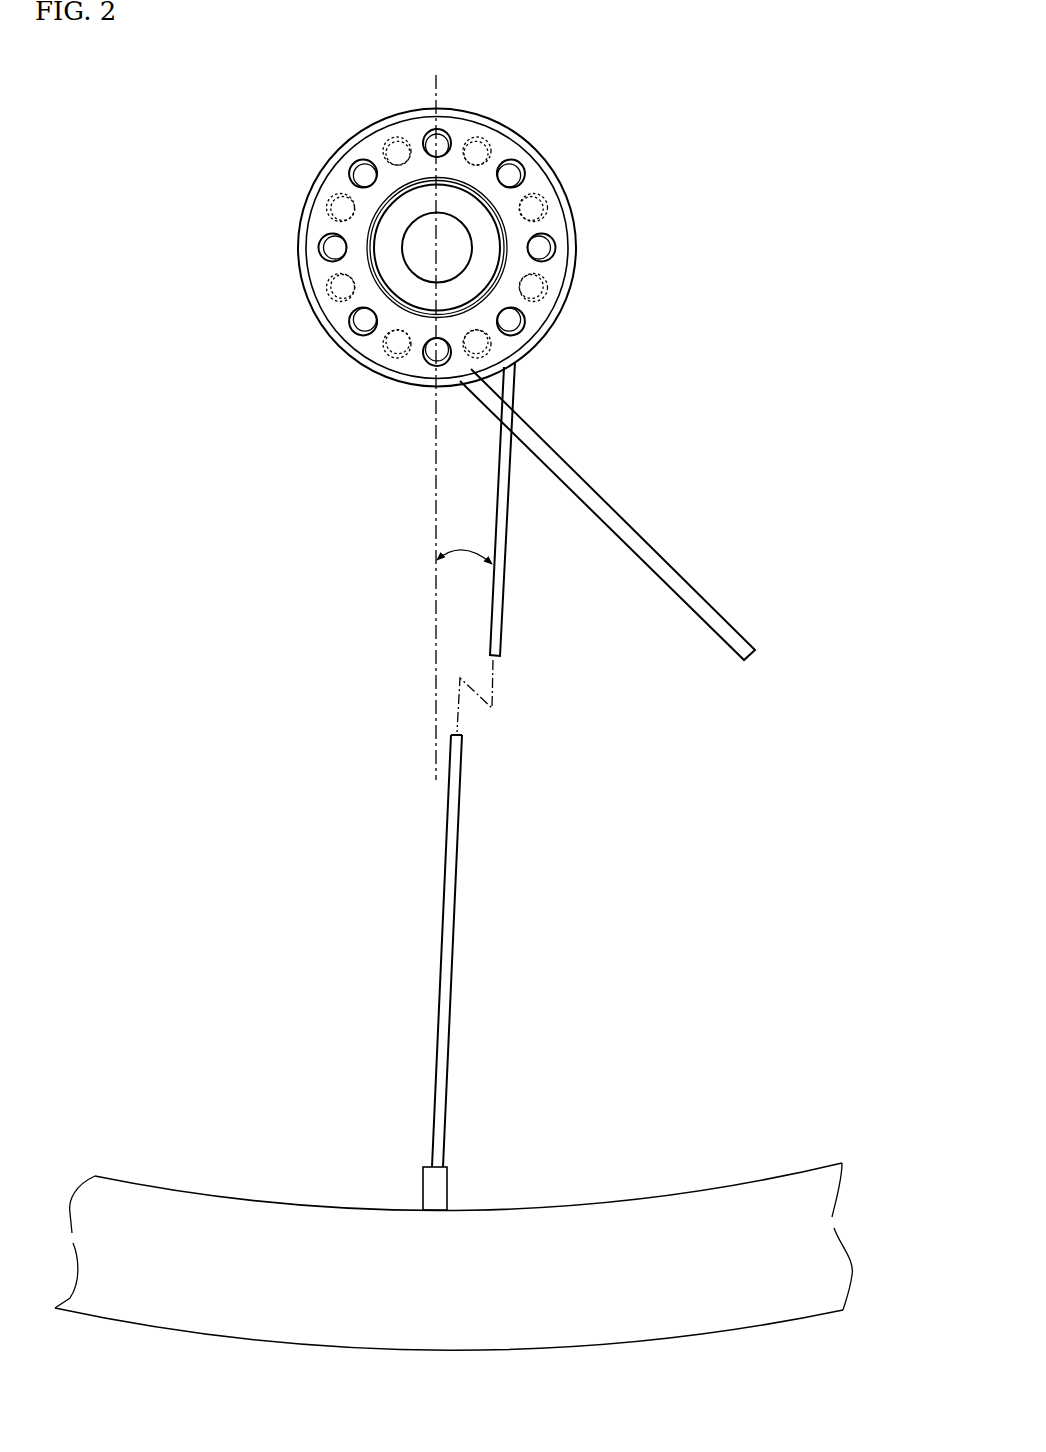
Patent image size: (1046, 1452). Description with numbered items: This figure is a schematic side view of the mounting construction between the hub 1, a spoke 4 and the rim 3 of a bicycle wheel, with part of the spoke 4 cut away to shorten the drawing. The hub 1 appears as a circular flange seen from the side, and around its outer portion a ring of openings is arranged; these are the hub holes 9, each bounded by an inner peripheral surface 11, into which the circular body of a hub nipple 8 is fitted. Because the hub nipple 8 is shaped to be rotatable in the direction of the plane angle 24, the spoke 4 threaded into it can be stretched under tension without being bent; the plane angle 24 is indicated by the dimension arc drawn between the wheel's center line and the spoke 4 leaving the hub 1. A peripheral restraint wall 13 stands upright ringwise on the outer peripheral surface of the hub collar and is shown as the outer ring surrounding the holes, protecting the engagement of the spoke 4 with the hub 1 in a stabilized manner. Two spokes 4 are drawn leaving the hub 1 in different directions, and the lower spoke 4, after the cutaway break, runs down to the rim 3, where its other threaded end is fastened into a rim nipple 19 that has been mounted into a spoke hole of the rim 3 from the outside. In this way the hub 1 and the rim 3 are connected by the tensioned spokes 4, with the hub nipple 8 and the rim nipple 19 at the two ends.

The hub 1 is at (300, 150).
The rim 3 is at (660, 1248).
The spoke 4 is at (663, 572).
The hub nipple 8 is at (433, 357).
The hub hole 9 is at (359, 327).
The inner peripheral surface 11 is at (319, 247).
The peripheral restraint wall 13 is at (562, 200).
The rim nipple 19 is at (432, 1188).
The plane angle 24 is at (462, 550).